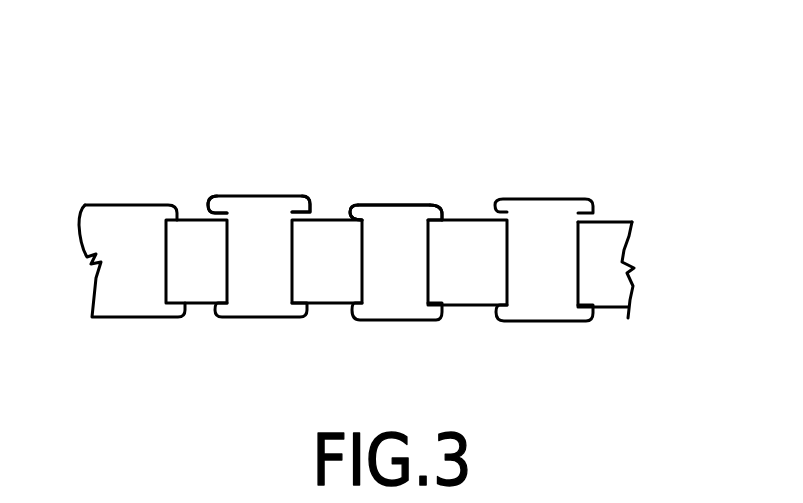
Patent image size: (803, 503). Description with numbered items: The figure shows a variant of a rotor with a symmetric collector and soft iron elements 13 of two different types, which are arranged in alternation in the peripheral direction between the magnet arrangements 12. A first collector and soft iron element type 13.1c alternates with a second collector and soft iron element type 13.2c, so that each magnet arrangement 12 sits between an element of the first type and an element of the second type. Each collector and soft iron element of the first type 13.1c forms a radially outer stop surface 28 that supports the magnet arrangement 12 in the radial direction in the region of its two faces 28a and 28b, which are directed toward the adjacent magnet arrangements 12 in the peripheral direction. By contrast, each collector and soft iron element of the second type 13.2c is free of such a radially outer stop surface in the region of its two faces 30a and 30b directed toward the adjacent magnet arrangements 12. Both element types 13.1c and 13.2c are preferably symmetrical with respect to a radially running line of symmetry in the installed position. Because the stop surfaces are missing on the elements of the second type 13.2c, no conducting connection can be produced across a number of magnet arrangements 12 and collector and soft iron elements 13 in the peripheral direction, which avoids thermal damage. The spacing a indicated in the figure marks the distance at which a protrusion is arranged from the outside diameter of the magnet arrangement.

The magnet arrangement 12 is at (198, 280).
The collector and soft iron element 13 is at (295, 120).
The first collector and soft iron element type 13.1c is at (408, 228).
The second collector and soft iron element type 13.2c is at (257, 228).
The radially outer stop surface 28 is at (476, 183).
The face of first element type 28a is at (352, 220).
The face of first element type 28b is at (437, 220).
The face of second element type 30a is at (203, 218).
The face of second element type 30b is at (307, 212).
The spacing a is at (303, 263).